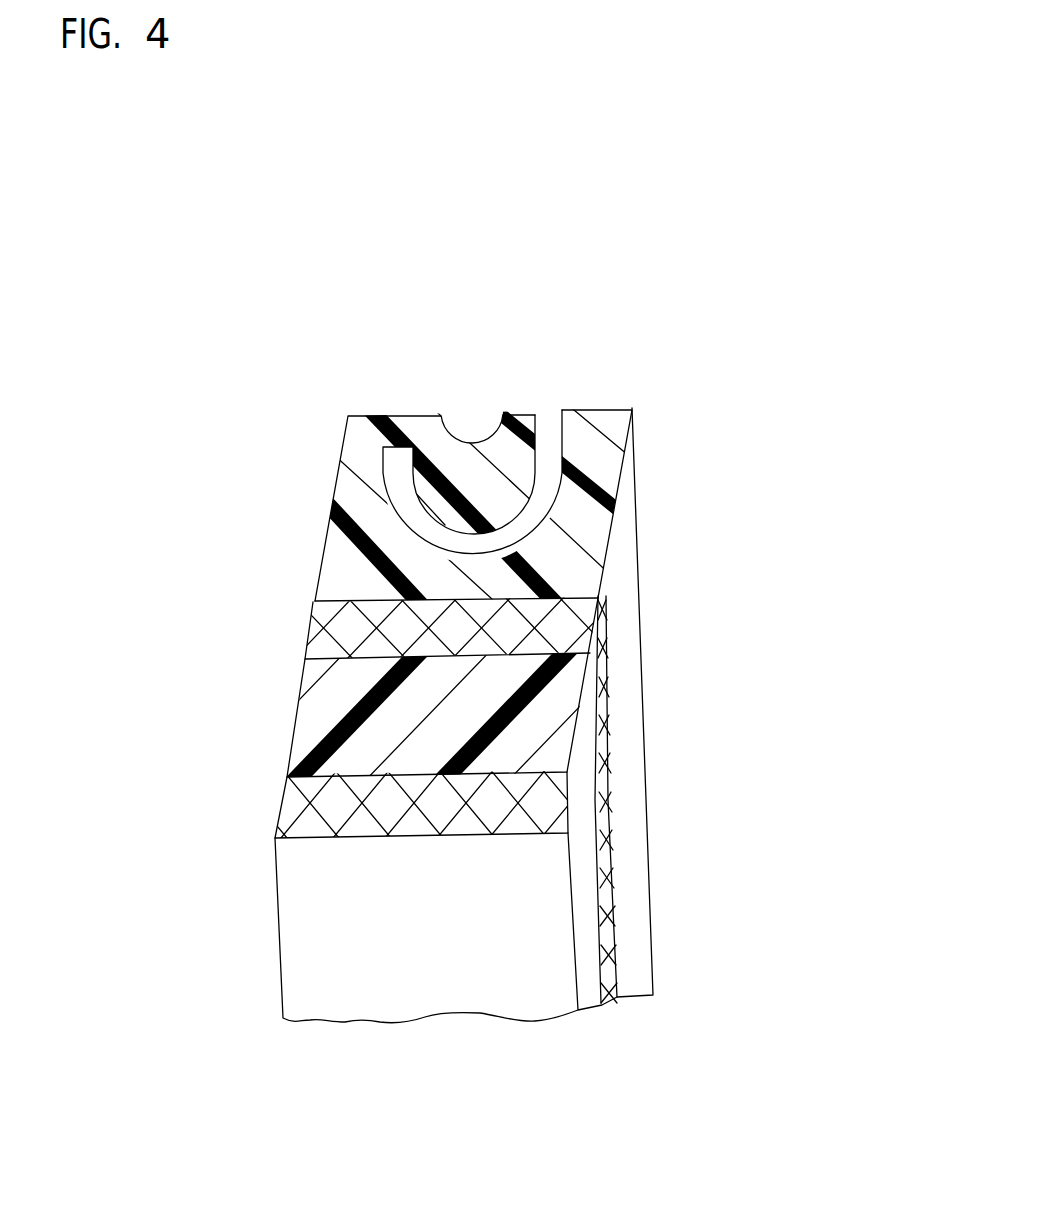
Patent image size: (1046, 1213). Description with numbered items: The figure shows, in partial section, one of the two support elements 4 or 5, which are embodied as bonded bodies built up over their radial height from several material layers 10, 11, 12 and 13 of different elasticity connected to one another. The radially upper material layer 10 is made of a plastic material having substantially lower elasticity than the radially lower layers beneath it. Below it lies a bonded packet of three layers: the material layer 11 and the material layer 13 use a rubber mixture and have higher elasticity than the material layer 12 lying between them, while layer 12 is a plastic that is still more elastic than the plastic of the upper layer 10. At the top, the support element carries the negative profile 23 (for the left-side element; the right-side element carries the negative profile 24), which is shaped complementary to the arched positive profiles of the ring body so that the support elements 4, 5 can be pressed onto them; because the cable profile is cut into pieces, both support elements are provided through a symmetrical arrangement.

The support element 4 is at (563, 627).
The support element 5 is at (563, 627).
The material layer 10 is at (584, 517).
The material layer 11 is at (569, 628).
The material layer 12 is at (528, 704).
The material layer 13 is at (533, 800).
The negative profile 23 is at (420, 522).
The negative profile 24 is at (472, 392).